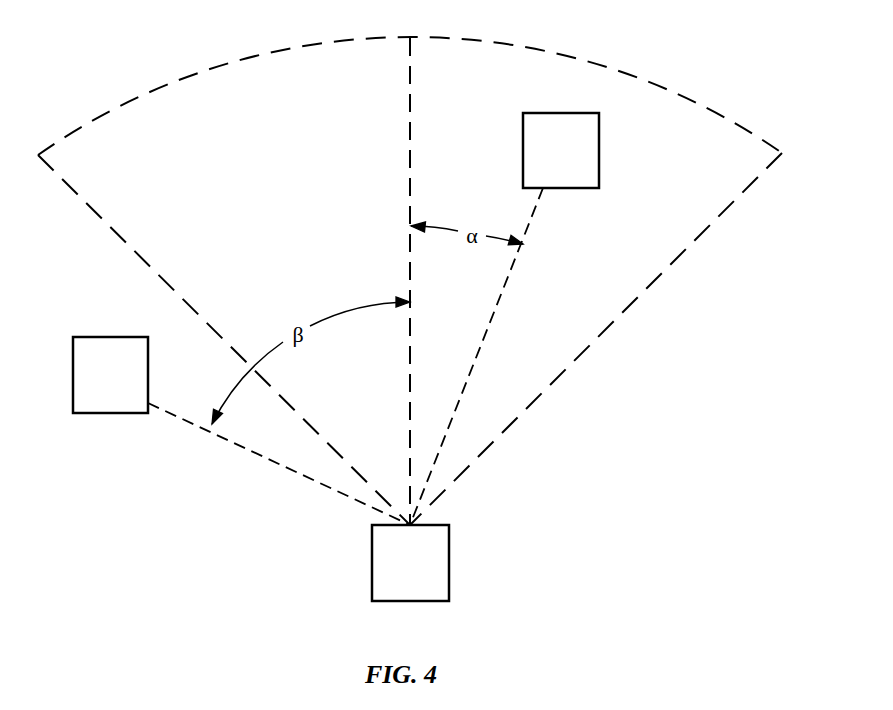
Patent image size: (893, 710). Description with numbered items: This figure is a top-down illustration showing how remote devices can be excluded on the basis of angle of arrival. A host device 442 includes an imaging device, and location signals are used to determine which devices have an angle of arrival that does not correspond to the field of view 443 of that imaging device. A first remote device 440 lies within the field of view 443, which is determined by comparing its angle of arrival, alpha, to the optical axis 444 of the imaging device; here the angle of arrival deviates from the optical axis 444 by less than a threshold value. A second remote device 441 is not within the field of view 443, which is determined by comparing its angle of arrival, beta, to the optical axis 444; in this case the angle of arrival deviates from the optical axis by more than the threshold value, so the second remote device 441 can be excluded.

The first remote device 440 is at (504, 319).
The second remote device 441 is at (241, 431).
The host device 442 is at (410, 563).
The field of view 443 is at (410, 110).
The optical axis 444 is at (694, 102).